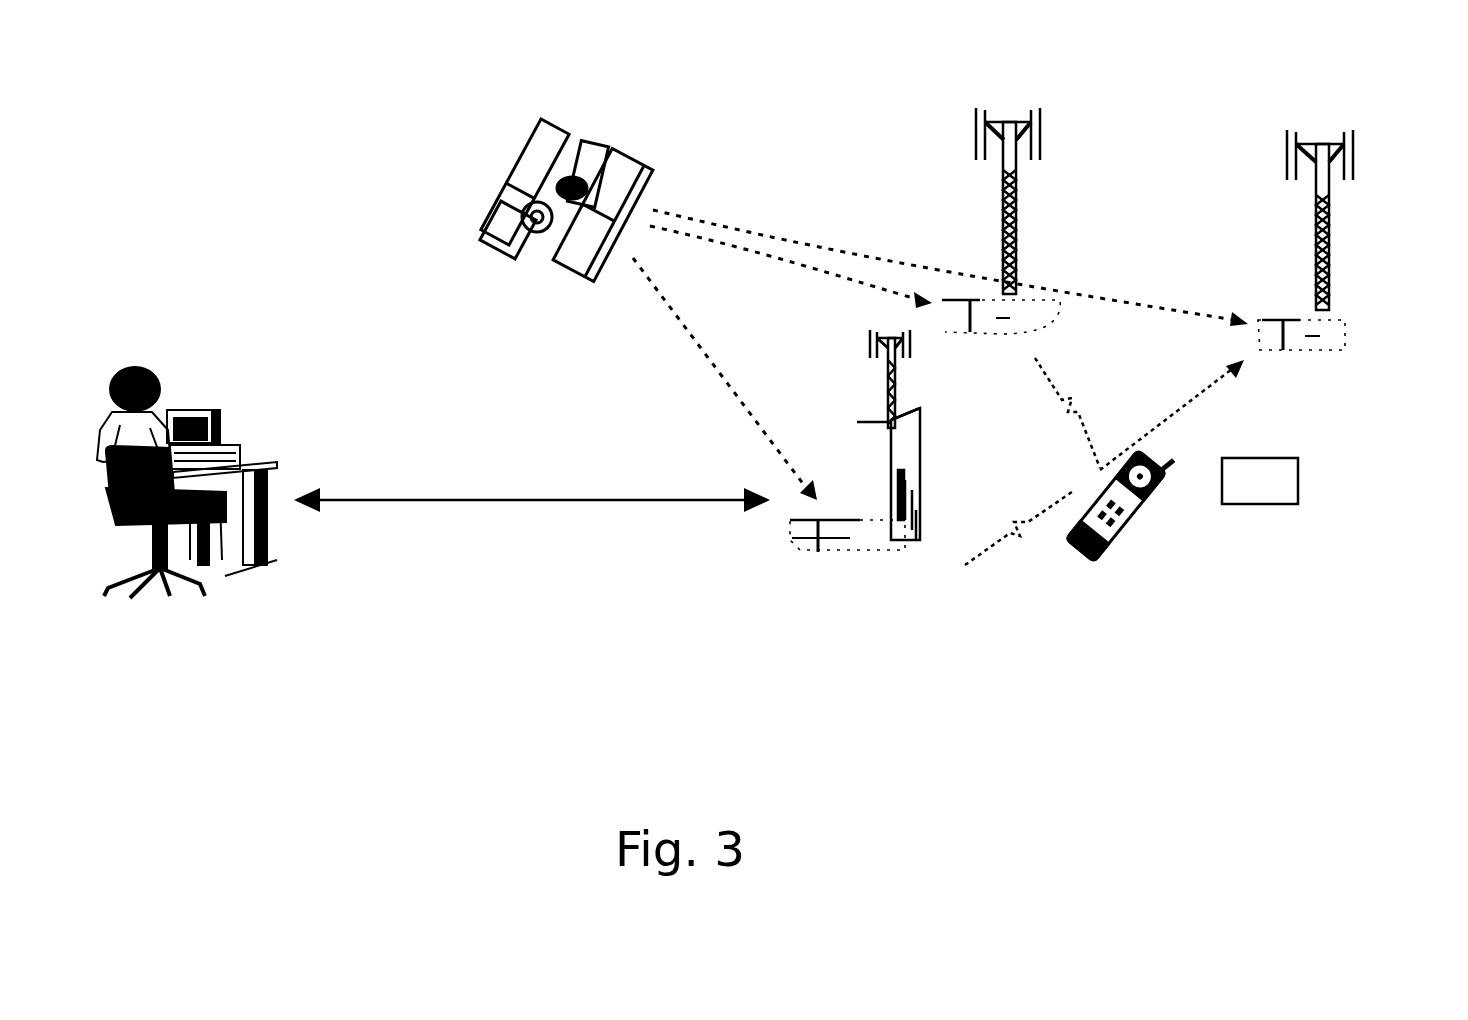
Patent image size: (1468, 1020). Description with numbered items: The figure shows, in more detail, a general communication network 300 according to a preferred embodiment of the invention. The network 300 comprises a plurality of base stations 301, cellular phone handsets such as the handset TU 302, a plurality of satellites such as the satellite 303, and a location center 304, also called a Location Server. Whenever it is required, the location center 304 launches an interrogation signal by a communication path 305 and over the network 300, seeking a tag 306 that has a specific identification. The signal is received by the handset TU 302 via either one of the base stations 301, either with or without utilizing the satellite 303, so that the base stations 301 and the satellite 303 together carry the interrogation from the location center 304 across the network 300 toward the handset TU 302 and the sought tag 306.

The communication network 300 is at (710, 620).
The base station 301 is at (978, 301).
The cellular phone handset (TU) 302 is at (1118, 517).
The satellite 303 is at (518, 162).
The location center 304 is at (193, 420).
The communication path 305 is at (490, 500).
The tag 306 is at (1283, 488).